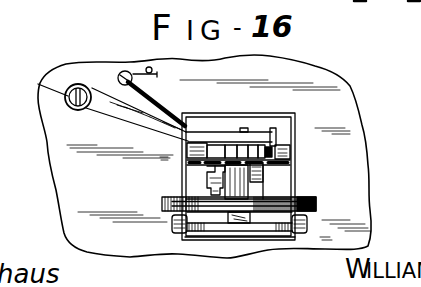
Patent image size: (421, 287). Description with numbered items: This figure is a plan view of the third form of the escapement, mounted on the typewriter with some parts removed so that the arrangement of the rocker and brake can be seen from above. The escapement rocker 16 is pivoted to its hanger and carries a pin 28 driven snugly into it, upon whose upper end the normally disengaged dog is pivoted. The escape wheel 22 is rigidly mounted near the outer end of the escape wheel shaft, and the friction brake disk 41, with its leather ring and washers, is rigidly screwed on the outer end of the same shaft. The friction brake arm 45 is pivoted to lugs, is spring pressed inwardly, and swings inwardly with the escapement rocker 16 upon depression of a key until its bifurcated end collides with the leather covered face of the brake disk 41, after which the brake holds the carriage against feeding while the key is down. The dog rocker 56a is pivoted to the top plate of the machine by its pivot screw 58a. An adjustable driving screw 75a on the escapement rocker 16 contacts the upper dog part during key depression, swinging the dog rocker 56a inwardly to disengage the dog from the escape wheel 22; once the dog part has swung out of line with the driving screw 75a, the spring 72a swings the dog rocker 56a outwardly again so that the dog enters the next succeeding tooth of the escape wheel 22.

The escapement rocker 16 is at (283, 167).
The escape wheel 22 is at (293, 147).
The pin 28 is at (204, 156).
The friction brake disk 41 is at (316, 207).
The friction brake arm 45 is at (250, 227).
The dog rocker 56a is at (138, 121).
The pivot screw 58a is at (36, 87).
The spring 72a is at (150, 102).
The adjustable driving screw 75a is at (211, 187).